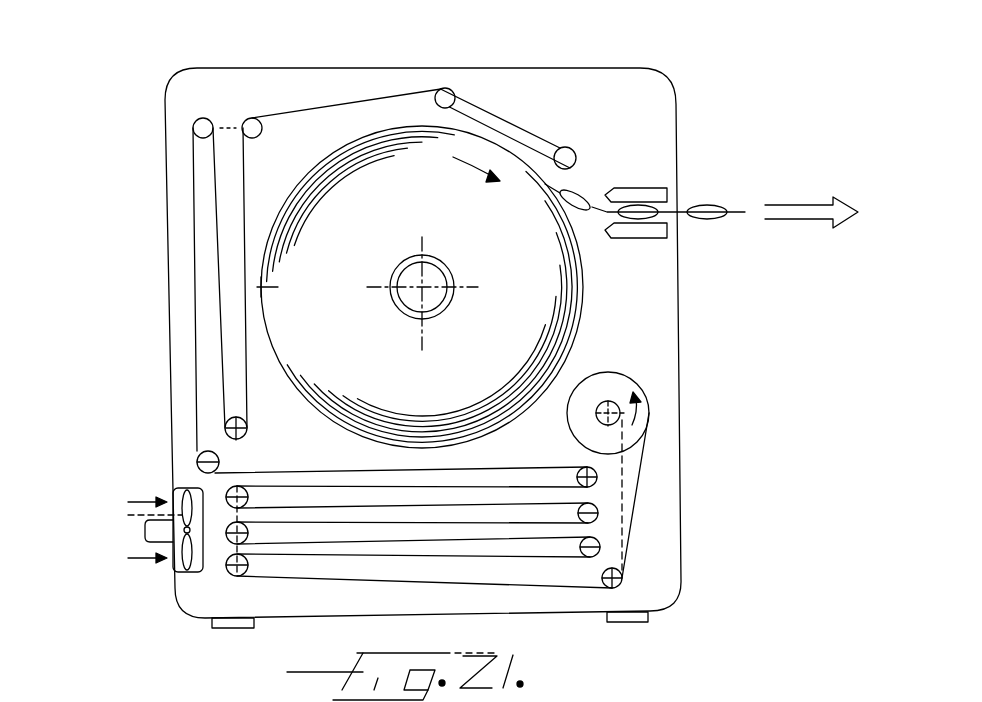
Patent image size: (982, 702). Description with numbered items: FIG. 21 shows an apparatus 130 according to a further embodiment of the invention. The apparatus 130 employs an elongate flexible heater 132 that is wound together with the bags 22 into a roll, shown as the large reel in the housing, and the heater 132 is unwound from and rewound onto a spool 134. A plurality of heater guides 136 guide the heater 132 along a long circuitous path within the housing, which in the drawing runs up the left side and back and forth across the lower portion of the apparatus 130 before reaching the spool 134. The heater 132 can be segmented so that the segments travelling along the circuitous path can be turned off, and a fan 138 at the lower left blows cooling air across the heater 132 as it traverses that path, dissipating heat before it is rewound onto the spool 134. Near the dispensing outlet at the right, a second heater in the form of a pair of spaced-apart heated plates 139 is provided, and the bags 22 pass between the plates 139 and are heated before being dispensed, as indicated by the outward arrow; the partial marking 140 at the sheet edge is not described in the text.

The apparatus 130 is at (600, 46).
The elongate flexible heater 132 is at (508, 113).
The spool 134 is at (608, 402).
The heater guides 136 is at (203, 130).
The fan 138 is at (125, 530).
The heated plates 139 is at (657, 230).
The bags 22 is at (705, 219).
The label 140 is at (687, 696).